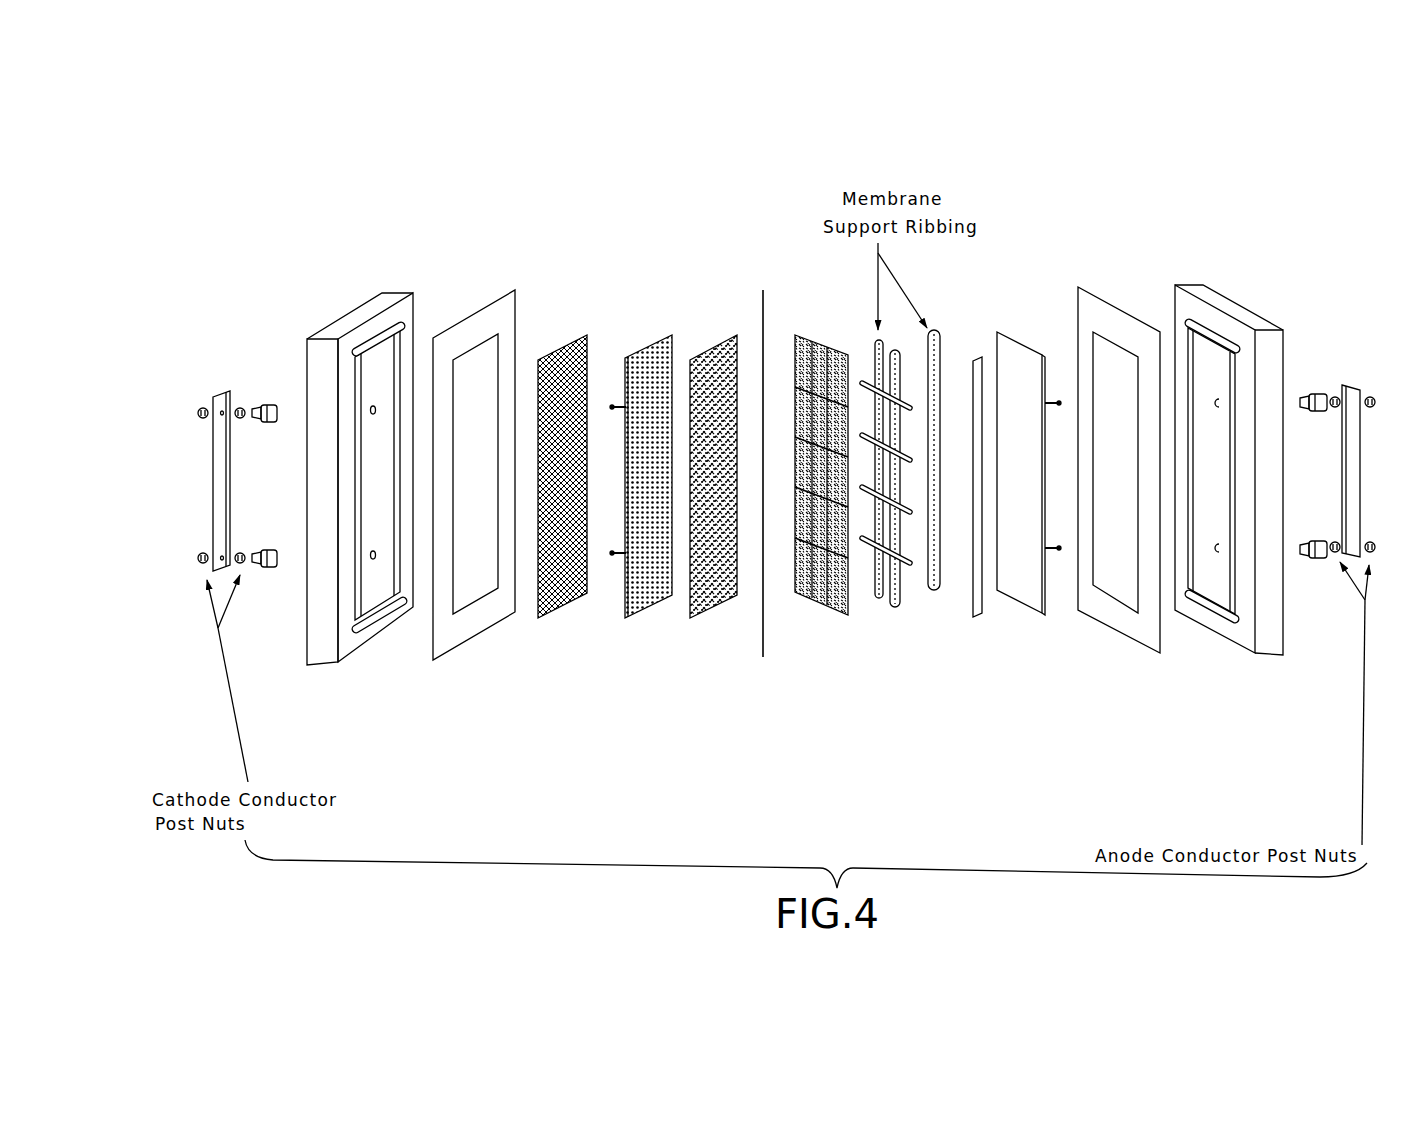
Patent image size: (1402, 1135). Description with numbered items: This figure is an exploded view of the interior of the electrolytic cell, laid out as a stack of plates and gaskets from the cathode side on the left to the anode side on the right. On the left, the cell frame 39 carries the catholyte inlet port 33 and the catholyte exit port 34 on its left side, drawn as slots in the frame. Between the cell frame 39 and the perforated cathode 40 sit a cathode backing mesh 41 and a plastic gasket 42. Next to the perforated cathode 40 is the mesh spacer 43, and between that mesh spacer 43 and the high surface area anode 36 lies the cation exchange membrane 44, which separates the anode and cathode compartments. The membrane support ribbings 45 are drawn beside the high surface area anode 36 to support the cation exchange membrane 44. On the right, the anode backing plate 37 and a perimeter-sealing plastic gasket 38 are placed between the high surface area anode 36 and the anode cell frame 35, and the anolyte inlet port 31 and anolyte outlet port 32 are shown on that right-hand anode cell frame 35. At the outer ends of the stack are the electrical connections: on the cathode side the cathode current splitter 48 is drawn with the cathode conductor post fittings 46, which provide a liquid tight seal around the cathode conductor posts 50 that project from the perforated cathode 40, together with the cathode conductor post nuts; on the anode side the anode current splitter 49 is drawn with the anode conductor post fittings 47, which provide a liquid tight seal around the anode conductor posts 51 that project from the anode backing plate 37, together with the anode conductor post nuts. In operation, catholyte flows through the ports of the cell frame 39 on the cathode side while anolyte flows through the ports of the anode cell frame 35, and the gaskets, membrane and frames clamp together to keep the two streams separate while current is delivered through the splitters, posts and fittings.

The anolyte inlet port 31 is at (1205, 615).
The anolyte outlet port 32 is at (1230, 340).
The catholyte inlet port 33 is at (381, 622).
The catholyte exit port 34 is at (455, 272).
The anode cell frame 35 is at (1102, 238).
The high surface area anode 36 is at (817, 150).
The anode backing plate 37 is at (1040, 353).
The perimeter-sealing plastic gasket 38 is at (1132, 318).
The cell frame 39 is at (398, 292).
The perforated cathode 40 is at (658, 340).
The cathode backing mesh 41 is at (573, 341).
The plastic gasket 42 is at (493, 315).
The mesh spacer 43 is at (727, 340).
The cation exchange membrane 44 is at (763, 662).
The membrane support ribbings 45 is at (930, 340).
The cathode conductor post fittings 46 is at (260, 432).
The anode conductor post fittings 47 is at (1312, 415).
The cathode current splitter 48 is at (250, 388).
The anode current splitter 49 is at (1350, 383).
The cathode conductor posts 50 is at (608, 418).
The anode conductor posts 51 is at (1060, 413).